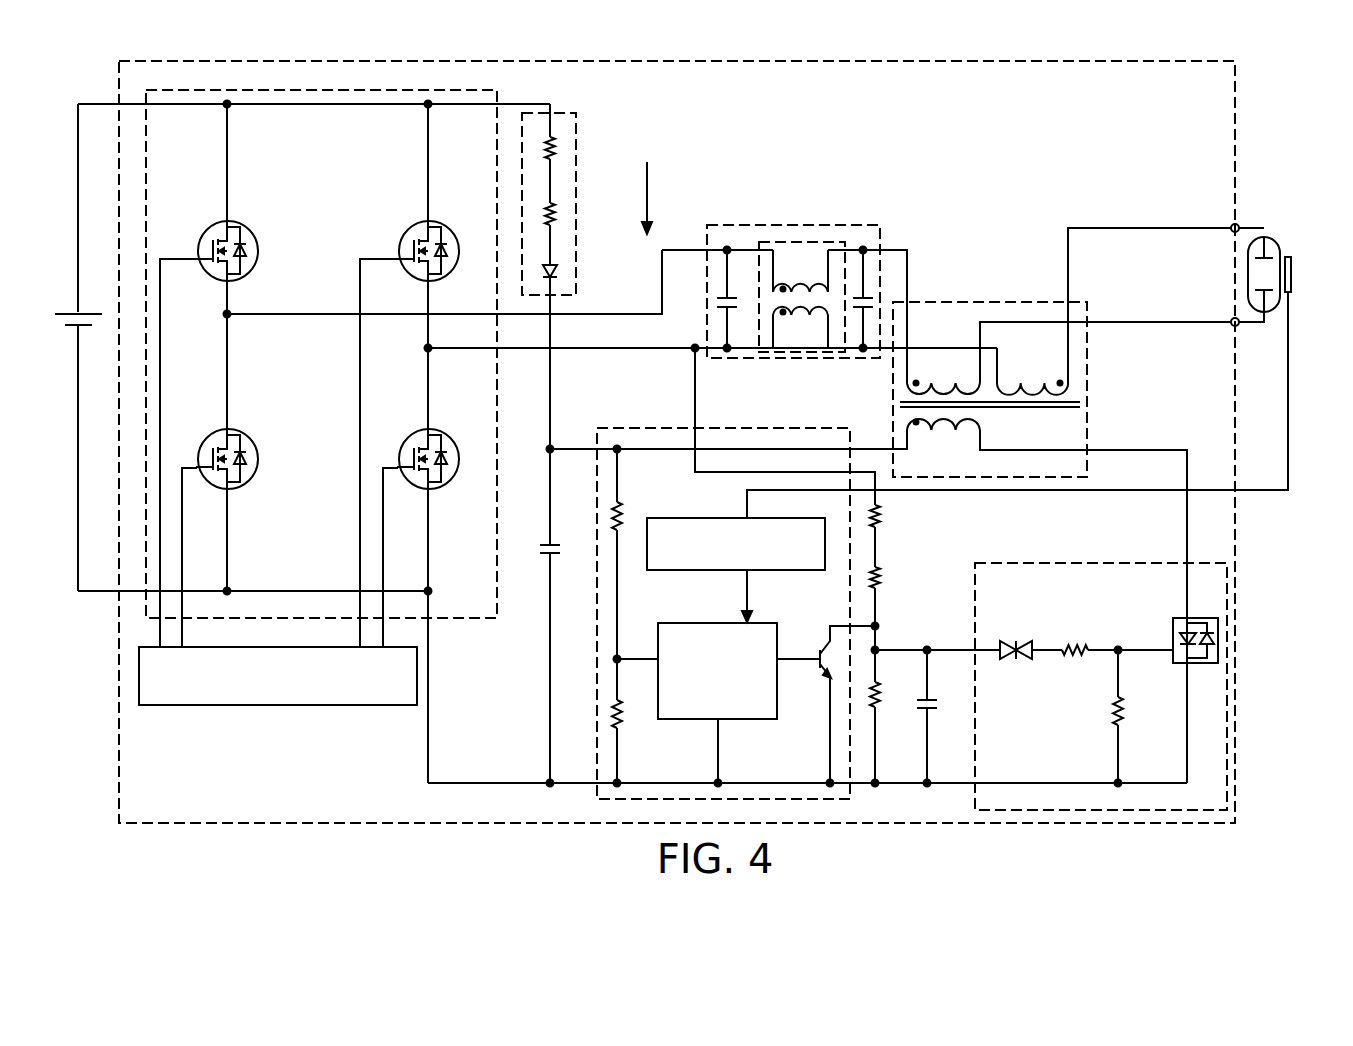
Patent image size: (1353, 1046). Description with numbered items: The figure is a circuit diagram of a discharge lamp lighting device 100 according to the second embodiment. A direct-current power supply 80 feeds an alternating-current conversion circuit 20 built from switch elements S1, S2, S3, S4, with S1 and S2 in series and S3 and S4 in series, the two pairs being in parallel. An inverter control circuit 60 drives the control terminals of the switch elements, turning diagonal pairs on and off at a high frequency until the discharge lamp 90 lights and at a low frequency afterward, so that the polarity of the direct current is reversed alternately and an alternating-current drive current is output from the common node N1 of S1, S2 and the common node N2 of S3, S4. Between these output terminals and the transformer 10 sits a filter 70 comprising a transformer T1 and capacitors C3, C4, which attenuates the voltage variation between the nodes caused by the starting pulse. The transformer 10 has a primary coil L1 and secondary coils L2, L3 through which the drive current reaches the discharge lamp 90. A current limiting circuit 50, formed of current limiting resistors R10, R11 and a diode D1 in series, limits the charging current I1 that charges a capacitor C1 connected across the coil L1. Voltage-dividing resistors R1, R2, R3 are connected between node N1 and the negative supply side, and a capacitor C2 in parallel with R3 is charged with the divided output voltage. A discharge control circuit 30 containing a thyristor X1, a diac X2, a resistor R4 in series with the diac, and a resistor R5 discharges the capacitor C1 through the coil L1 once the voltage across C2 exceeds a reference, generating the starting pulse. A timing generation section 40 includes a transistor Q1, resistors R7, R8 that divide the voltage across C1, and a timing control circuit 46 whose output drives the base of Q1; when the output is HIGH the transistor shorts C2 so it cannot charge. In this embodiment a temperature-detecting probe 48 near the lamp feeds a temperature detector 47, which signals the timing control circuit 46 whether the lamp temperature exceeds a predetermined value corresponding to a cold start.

The discharge lamp lighting device 100 is at (1235, 84).
The alternating-current conversion circuit 20 is at (498, 100).
The direct-current power supply 80 is at (80, 312).
The switch element S1 is at (436, 224).
The switch element S2 is at (436, 432).
The switch element S3 is at (235, 224).
The switch element S4 is at (235, 432).
The common node N1 is at (425, 349).
The common node N2 is at (231, 317).
The inverter control circuit 60 is at (342, 705).
The current limiting circuit 50 is at (576, 114).
The current limiting resistor R10 is at (553, 143).
The current limiting resistor R11 is at (553, 210).
The diode D1 is at (556, 270).
The charging current I1 is at (657, 198).
The filter 70 is at (712, 225).
The transformer T1 is at (805, 242).
The capacitor C3 is at (721, 296).
The capacitor C4 is at (869, 296).
The transformer 10 is at (995, 302).
The primary coil L1 is at (907, 422).
The secondary coil L2 is at (907, 380).
The secondary coil L3 is at (1070, 380).
The discharge lamp 90 is at (1272, 238).
The temperature-detecting probe 48 is at (1292, 272).
The timing generation section 40 is at (653, 428).
The capacitor C1 is at (549, 545).
The resistor R7 is at (620, 507).
The resistor R8 is at (620, 730).
The temperature detector 47 is at (797, 519).
The timing control circuit 46 is at (758, 622).
The transistor Q1 is at (818, 668).
The voltage-dividing resistor R1 is at (879, 512).
The voltage-dividing resistor R2 is at (879, 572).
The voltage-dividing resistor R3 is at (877, 710).
The capacitor C2 is at (930, 710).
The discharge control circuit 30 is at (1100, 563).
The diac X2 is at (1013, 640).
The resistor R4 is at (1075, 640).
The resistor R5 is at (1115, 710).
The thyristor X1 is at (1173, 620).